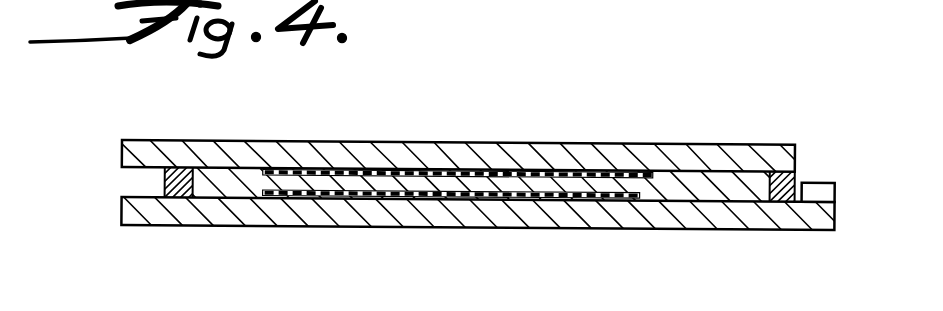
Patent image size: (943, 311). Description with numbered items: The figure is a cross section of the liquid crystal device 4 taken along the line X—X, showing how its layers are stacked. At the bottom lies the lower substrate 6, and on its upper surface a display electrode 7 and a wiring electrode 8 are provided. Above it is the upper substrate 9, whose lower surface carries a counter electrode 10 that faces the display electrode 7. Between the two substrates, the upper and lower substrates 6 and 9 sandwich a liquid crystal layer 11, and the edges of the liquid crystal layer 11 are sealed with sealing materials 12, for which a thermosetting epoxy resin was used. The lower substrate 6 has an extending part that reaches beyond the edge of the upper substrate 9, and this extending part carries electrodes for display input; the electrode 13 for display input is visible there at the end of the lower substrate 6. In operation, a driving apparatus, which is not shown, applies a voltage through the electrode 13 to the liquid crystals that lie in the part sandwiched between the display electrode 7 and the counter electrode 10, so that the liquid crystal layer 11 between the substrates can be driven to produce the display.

The liquid crystal device 4 is at (622, 131).
The lower substrate 6 is at (761, 222).
The display electrode 7 is at (351, 197).
The wiring electrode 8 is at (437, 195).
The upper substrate 9 is at (700, 155).
The counter electrode 10 is at (473, 170).
The liquid crystal layer 11 is at (675, 192).
The sealing material 12 is at (172, 197).
The electrode for display input 13 is at (823, 183).